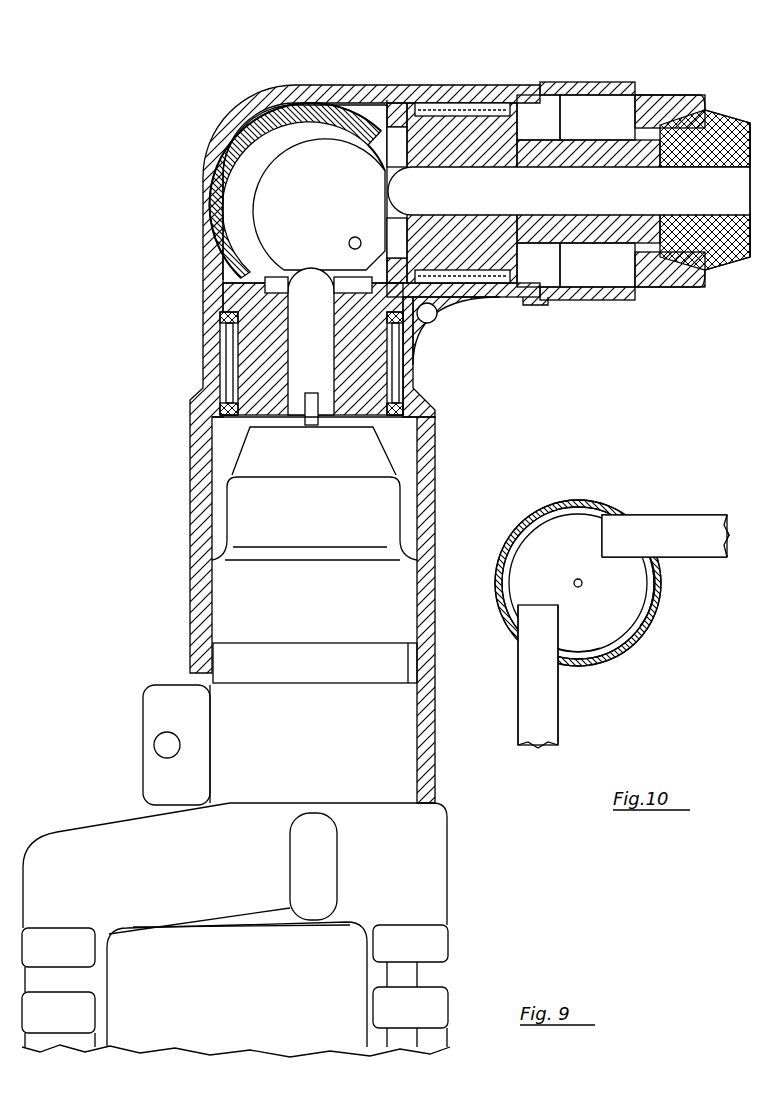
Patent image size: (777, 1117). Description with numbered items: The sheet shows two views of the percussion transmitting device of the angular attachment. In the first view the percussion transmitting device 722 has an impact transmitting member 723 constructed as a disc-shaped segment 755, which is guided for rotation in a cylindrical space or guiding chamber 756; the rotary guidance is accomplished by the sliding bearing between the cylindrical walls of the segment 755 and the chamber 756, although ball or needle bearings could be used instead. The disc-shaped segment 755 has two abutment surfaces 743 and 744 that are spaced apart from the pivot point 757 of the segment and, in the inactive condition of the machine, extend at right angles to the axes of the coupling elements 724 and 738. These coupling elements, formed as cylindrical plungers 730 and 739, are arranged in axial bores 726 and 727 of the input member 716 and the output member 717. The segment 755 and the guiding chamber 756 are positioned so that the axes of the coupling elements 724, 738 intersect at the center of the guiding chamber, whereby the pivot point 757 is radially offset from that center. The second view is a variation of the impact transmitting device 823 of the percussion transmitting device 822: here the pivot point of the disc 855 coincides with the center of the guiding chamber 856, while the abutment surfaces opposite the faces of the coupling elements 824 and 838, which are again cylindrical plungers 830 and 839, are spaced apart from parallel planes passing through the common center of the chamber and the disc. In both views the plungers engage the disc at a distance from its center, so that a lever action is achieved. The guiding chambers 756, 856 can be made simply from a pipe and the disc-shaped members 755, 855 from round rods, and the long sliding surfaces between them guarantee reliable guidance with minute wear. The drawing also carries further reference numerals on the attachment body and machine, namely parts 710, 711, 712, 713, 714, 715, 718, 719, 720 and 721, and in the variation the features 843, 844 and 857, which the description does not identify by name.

In FIG. 9, the motor housing 710 is at (268, 982).
In FIG. 9, the cylinder body 711 is at (250, 522).
In FIG. 9, the head housing 712 is at (325, 85).
In FIG. 9, the piston 713 is at (397, 445).
In FIG. 9, the lower body 714 is at (420, 855).
In FIG. 9, the mounting bracket 715 is at (157, 712).
In FIG. 9, the input member 716 is at (258, 415).
In FIG. 9, the output member 717 is at (660, 247).
In FIG. 9, the bearing boss 718 is at (457, 320).
In FIG. 9, the bushing 719 is at (235, 310).
In FIG. 9, the plunger end 720 is at (383, 135).
In FIG. 9, the nozzle outlet 721 is at (748, 195).
In FIG. 9, the percussion transmitting device 722 is at (243, 143).
In FIG. 9, the impact transmitting member 723 is at (285, 203).
In FIG. 9, the coupling element 724 is at (220, 347).
In FIG. 9, the axial bore 726 is at (397, 357).
In FIG. 9, the axial bore 727 is at (587, 177).
In FIG. 9, the cylindrical plunger 730 is at (217, 393).
In FIG. 9, the coupling element 738 is at (452, 190).
In FIG. 9, the cylindrical plunger 739 is at (482, 183).
In FIG. 9, the abutment surface 743 is at (330, 268).
In FIG. 9, the abutment surface 744 is at (367, 137).
In FIG. 9, the disc-shaped segment 755 is at (280, 107).
In FIG. 9, the guiding chamber 756 is at (232, 163).
In FIG. 9, the pivot point 757 is at (517, 303).
In FIG. 10, the percussion transmitting device 822 is at (507, 528).
In FIG. 10, the impact transmitting device 823 is at (598, 623).
In FIG. 10, the coupling element 824 is at (536, 640).
In FIG. 10, the cylindrical plunger 830 is at (532, 698).
In FIG. 10, the coupling element 838 is at (633, 538).
In FIG. 10, the cylindrical plunger 839 is at (676, 538).
In FIG. 10, the inner ring 843 is at (540, 603).
In FIG. 10, the intermediate ring 844 is at (585, 525).
In FIG. 10, the disc 855 is at (620, 588).
In FIG. 10, the guiding chamber 856 is at (558, 500).
In FIG. 10, the center hole 857 is at (580, 590).